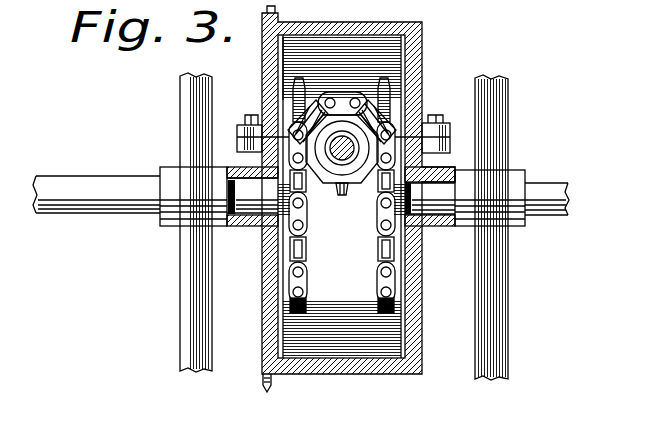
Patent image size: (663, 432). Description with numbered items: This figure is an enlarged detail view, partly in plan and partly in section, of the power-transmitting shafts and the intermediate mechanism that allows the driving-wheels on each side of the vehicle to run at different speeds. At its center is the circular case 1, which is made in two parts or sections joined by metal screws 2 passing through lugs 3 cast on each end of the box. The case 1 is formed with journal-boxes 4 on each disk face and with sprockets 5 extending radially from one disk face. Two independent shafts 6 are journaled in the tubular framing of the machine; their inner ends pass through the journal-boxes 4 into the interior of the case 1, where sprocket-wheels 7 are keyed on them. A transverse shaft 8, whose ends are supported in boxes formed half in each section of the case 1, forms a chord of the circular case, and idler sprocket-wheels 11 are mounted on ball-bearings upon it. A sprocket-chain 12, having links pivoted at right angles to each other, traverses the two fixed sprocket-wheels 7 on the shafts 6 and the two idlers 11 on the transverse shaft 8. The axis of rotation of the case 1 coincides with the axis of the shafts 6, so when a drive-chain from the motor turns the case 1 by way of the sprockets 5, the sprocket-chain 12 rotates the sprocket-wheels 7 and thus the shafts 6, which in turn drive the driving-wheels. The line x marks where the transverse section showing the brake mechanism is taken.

The case 1 is at (341, 378).
The section line x x is at (397, 125).
The metal screws 2 is at (246, 116).
The lugs 3 is at (238, 142).
The journal-boxes 4 is at (249, 228).
The sprockets 5 is at (276, 11).
The shafts 6 is at (135, 182).
The sprocket-wheels 7 is at (308, 220).
The transverse shaft 8 is at (342, 151).
The idler sprocket-wheels 11 is at (338, 187).
The sprocket-chain 12 is at (377, 278).